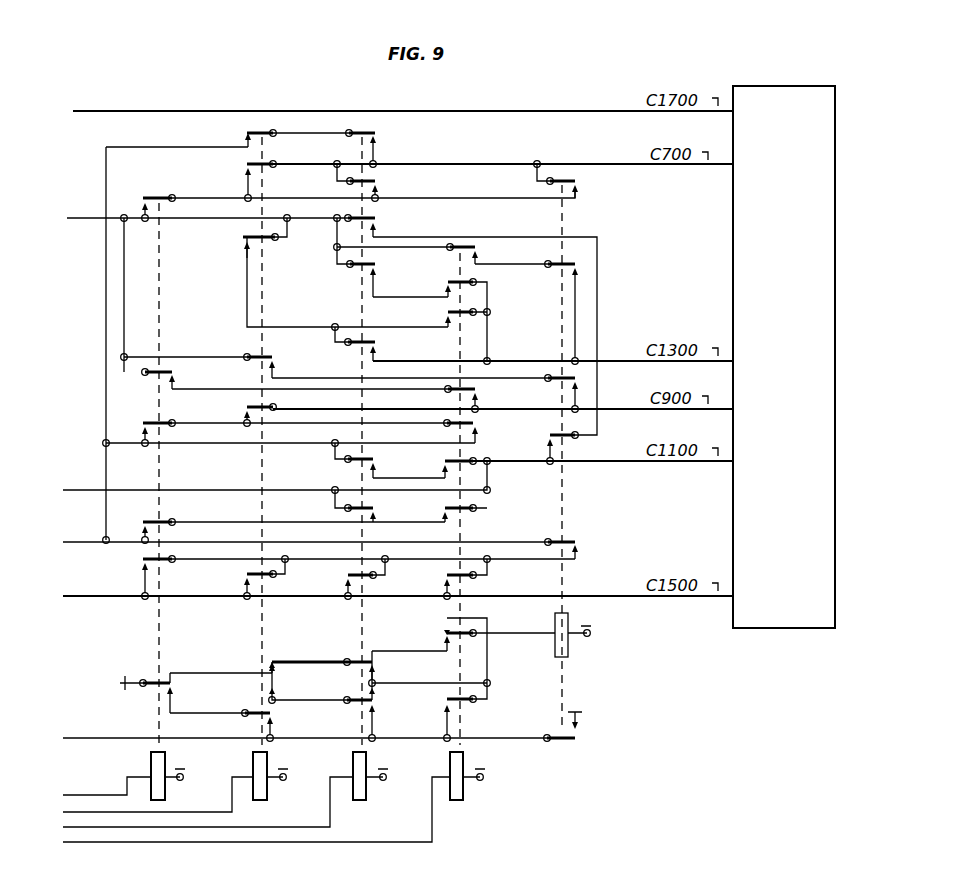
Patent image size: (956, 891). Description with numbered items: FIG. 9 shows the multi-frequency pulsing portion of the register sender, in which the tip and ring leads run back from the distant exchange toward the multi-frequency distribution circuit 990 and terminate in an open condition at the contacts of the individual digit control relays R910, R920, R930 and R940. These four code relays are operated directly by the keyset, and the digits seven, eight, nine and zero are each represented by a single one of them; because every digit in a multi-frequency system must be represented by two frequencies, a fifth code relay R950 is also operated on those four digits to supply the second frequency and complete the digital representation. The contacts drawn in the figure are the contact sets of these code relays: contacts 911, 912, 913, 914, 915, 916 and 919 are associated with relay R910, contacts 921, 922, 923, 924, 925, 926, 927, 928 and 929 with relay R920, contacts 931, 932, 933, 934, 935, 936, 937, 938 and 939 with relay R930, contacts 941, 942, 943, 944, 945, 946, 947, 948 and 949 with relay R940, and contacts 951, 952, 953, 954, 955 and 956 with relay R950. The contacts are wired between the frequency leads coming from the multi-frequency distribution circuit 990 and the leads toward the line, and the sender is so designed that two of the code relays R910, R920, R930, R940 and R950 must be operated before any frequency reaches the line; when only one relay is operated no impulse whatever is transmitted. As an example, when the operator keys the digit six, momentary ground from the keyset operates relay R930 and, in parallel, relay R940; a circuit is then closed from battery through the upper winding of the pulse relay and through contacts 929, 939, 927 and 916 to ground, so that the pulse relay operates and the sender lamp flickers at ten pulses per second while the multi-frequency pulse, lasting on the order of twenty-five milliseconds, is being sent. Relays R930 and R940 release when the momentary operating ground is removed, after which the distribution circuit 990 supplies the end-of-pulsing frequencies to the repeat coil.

The switch contact 911 is at (144, 201).
The switch contact 912 is at (174, 377).
The switch contact 913 is at (140, 423).
The switch contact 914 is at (140, 523).
The switch contact 915 is at (140, 565).
The contacts 916 is at (172, 689).
The switch contact 919 is at (376, 705).
The switch contact 921 is at (244, 137).
The switch contact 922 is at (244, 168).
The switch contact 923 is at (242, 242).
The switch contact 924 is at (275, 363).
The switch contact 925 is at (244, 409).
The switch contact 926 is at (242, 577).
The contacts 927 is at (273, 678).
The switch contact 928 is at (273, 718).
The contacts 929 is at (455, 705).
The switch contact 931 is at (377, 137).
The switch contact 932 is at (378, 185).
The switch contact 933 is at (378, 222).
The switch contact 934 is at (378, 268).
The switch contact 935 is at (378, 348).
The switch contact 936 is at (358, 474).
The switch contact 937 is at (377, 513).
The switch contact 938 is at (345, 577).
The contacts 939 is at (376, 663).
The switch contact 941 is at (478, 252).
The switch contact 942 is at (445, 286).
The switch contact 943 is at (445, 317).
The switch contact 944 is at (478, 395).
The switch contact 945 is at (478, 430).
The switch contact 946 is at (443, 467).
The switch contact 947 is at (455, 512).
The switch contact 948 is at (445, 577).
The switch contact 949 is at (443, 632).
The switch contact 951 is at (578, 188).
The switch contact 952 is at (565, 274).
The switch contact 953 is at (567, 385).
The switch contact 954 is at (548, 444).
The switch contact 955 is at (578, 548).
The switch contact 956 is at (578, 736).
The multi-frequency distribution circuit 990 is at (784, 357).
The individual digit control relay R910 is at (165, 760).
The individual digit control relay R920 is at (267, 760).
The individual digit control relay R930 is at (366, 760).
The individual digit control relay R940 is at (463, 760).
The fifth code relay R950 is at (569, 620).